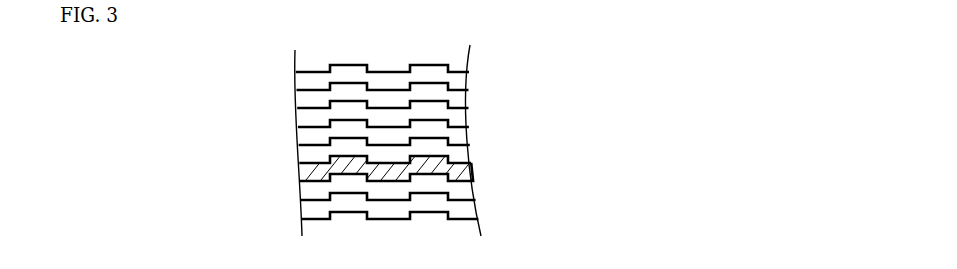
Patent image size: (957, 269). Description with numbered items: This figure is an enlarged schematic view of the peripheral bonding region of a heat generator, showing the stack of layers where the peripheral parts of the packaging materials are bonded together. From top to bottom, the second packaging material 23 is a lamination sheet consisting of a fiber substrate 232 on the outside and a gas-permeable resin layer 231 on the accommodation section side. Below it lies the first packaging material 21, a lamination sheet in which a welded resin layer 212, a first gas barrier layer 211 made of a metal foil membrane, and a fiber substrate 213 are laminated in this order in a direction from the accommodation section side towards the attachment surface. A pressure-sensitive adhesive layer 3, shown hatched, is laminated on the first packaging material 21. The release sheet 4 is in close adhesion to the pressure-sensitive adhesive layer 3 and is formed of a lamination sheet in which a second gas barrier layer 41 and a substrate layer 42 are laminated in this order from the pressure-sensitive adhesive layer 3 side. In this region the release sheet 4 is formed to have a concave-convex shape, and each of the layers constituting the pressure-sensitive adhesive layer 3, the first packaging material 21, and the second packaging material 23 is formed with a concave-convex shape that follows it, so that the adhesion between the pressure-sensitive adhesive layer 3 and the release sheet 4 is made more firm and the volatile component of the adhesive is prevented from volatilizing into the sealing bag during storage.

The pressure-sensitive adhesive layer 3 is at (479, 179).
The release sheet 4 is at (163, 170).
The second gas barrier layer 41 is at (302, 196).
The substrate layer 42 is at (302, 220).
The first packaging material 21 is at (625, 47).
The first gas barrier layer 211 is at (472, 138).
The welded resin layer 212 is at (467, 118).
The fiber substrate 213 is at (473, 161).
The second packaging material 23 is at (168, 32).
The gas-permeable resin layer 231 is at (292, 101).
The fiber substrate 232 is at (291, 78).